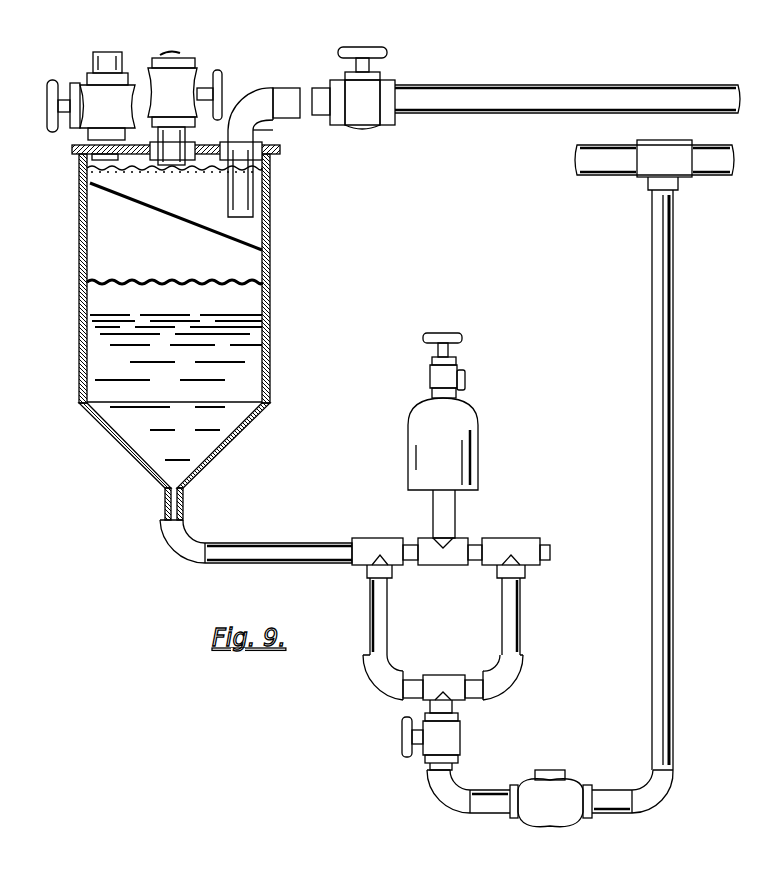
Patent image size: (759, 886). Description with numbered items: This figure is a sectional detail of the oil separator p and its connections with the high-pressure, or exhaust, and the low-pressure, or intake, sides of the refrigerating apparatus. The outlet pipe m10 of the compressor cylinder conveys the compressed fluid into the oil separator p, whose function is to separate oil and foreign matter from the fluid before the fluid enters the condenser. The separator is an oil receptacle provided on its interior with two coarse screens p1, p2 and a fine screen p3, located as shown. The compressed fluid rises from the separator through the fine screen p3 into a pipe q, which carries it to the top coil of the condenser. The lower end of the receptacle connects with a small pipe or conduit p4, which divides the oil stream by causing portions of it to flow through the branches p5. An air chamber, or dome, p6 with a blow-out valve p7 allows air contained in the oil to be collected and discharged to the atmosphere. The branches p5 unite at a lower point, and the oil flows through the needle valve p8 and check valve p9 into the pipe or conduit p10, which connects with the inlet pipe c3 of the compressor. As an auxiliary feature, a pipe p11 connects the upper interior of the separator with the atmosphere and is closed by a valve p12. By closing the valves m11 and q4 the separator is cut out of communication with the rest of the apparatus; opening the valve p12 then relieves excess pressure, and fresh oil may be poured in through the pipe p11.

The oil separator p is at (79, 240).
The coarse screen p1 is at (108, 281).
The coarse screen p2 is at (173, 223).
The fine screen p3 is at (185, 174).
The pipe or conduit p4 is at (248, 550).
The branches p5 is at (388, 601).
The air chamber or dome p6 is at (443, 468).
The blow-out valve p7 is at (430, 375).
The needle valve p8 is at (445, 741).
The check valve p9 is at (551, 798).
The pipe or conduit p10 is at (652, 462).
The pipe p11 is at (93, 61).
The valve p12 is at (95, 116).
The pipe q is at (180, 51).
The valve q4 is at (187, 87).
The valve m11 is at (390, 94).
The outlet pipe m10 is at (458, 104).
The inlet pipe c3 is at (711, 177).